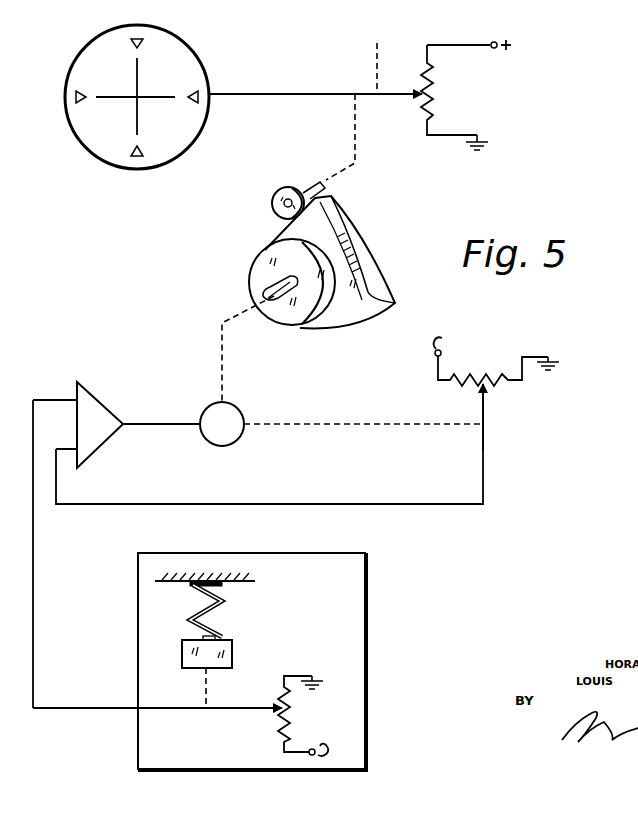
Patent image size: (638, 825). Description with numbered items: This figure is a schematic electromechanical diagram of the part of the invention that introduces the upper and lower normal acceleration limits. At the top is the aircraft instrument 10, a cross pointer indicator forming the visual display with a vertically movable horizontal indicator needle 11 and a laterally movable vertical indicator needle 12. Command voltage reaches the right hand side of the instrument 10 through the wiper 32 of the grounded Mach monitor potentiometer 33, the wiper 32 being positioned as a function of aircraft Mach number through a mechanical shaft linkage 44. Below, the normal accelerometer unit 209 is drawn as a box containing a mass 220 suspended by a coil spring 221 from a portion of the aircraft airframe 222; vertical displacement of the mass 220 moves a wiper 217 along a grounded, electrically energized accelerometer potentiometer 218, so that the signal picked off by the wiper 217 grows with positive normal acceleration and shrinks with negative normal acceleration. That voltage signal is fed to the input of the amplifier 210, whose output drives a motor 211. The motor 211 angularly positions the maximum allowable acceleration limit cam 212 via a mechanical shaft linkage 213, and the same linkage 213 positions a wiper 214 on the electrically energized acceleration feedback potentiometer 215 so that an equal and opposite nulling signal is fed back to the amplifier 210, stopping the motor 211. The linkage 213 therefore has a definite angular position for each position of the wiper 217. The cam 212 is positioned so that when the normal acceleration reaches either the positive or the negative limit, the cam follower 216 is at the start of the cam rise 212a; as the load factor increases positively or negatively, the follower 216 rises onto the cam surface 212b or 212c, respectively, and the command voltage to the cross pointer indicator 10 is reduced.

The aircraft instrument 10 is at (82, 43).
The horizontal indicator needle 11 is at (153, 98).
The vertical indicator needle 12 is at (136, 72).
The wiper 32 is at (295, 94).
The Mach monitor potentiometer 33 is at (435, 66).
The mechanical shaft linkage 44 is at (380, 66).
The normal accelerometer unit 209 is at (367, 641).
The amplifier 210 is at (109, 408).
The motor 211 is at (240, 409).
The maximum allowable acceleration limit cam 212 is at (278, 320).
The cam rise 212a is at (249, 278).
The cam surface 212b is at (321, 198).
The cam surface 212c is at (369, 316).
The mechanical shaft linkage 213 is at (221, 382).
The wiper 214 is at (486, 399).
The acceleration feedback potentiometer 215 is at (464, 386).
The cam follower 216 is at (355, 140).
The wiper 217 is at (262, 705).
The accelerometer potentiometer 218 is at (281, 724).
The mass 220 is at (232, 657).
The coil spring 221 is at (221, 617).
The airframe 222 is at (245, 583).